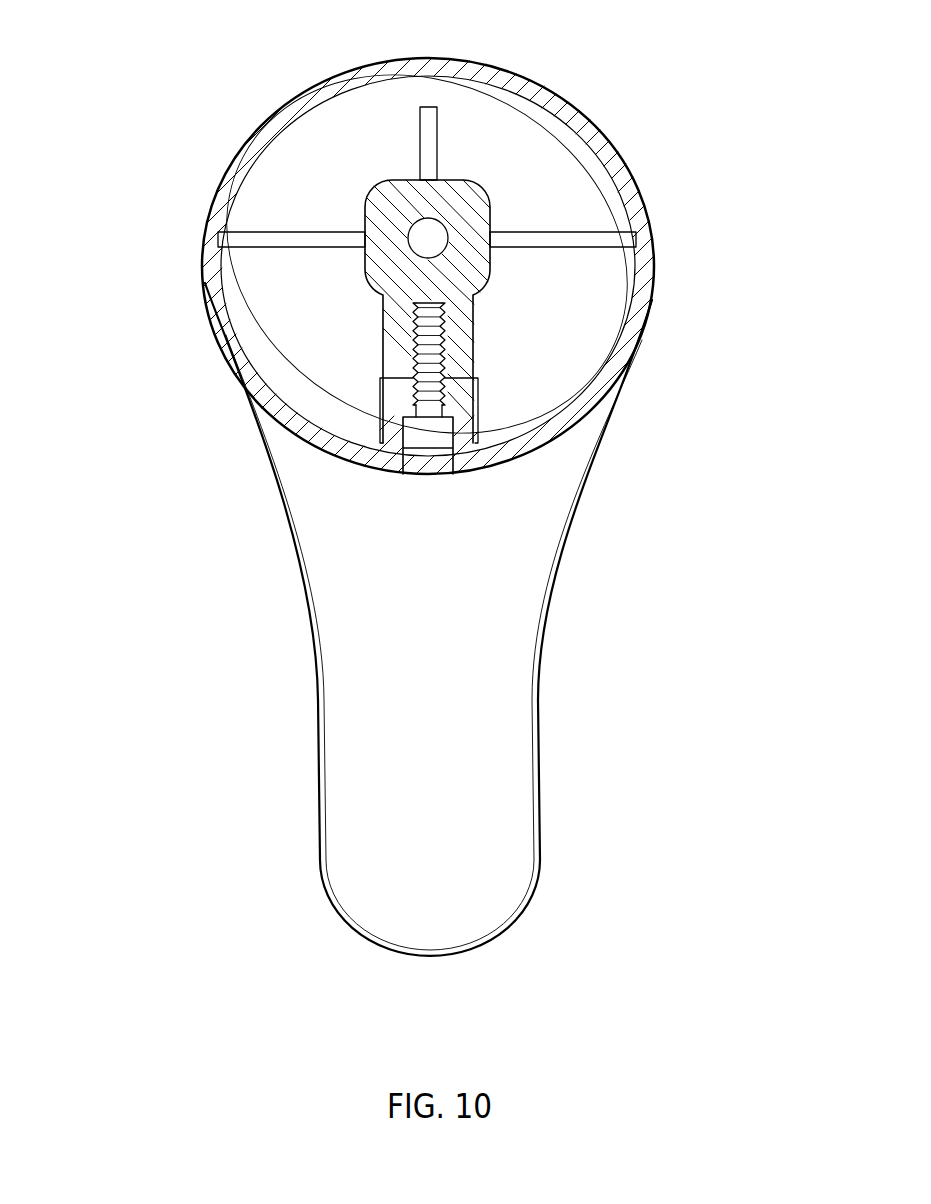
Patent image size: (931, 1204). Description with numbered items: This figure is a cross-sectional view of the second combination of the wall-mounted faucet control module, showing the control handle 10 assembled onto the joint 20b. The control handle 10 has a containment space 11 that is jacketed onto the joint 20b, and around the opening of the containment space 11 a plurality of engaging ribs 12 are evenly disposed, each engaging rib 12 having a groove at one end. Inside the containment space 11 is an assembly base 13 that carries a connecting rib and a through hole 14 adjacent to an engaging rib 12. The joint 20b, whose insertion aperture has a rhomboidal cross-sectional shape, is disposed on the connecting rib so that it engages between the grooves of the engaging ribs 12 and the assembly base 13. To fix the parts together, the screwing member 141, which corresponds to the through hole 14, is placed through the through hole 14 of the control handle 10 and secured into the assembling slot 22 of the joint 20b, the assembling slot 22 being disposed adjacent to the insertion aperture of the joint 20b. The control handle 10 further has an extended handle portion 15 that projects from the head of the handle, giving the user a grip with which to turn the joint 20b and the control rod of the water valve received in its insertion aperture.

The control handle 10 is at (353, 500).
The containment space 11 is at (340, 197).
The engaging rib 12 is at (428, 143).
The assembly base 13 is at (380, 378).
The through hole 14 is at (628, 388).
The screwing member 141 is at (633, 354).
The assembling slot 22 is at (443, 348).
The joint 20b is at (440, 202).
The extended handle portion 15 is at (455, 868).